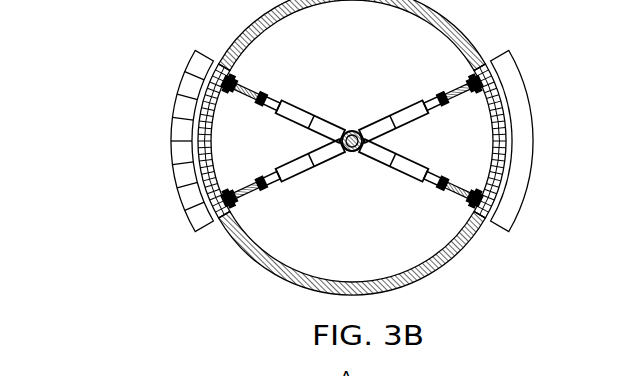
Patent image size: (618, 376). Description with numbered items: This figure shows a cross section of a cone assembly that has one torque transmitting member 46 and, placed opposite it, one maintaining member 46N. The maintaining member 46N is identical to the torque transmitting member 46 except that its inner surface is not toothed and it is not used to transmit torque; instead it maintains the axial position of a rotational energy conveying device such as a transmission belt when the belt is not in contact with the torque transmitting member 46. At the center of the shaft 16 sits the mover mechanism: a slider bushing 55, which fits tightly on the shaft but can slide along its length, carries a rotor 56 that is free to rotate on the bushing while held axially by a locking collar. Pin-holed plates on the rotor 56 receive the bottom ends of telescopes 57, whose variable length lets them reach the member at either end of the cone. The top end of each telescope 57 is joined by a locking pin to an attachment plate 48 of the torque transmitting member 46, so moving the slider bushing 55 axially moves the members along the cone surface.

The pipe axis center 16 is at (373, 106).
The torque transmitting member 46 is at (186, 131).
The maintaining member 46N is at (522, 146).
The attachment plate 48 is at (352, 165).
The slider bushing 55 is at (364, 96).
The rotor 56 is at (365, 178).
The telescope 57 is at (351, 152).